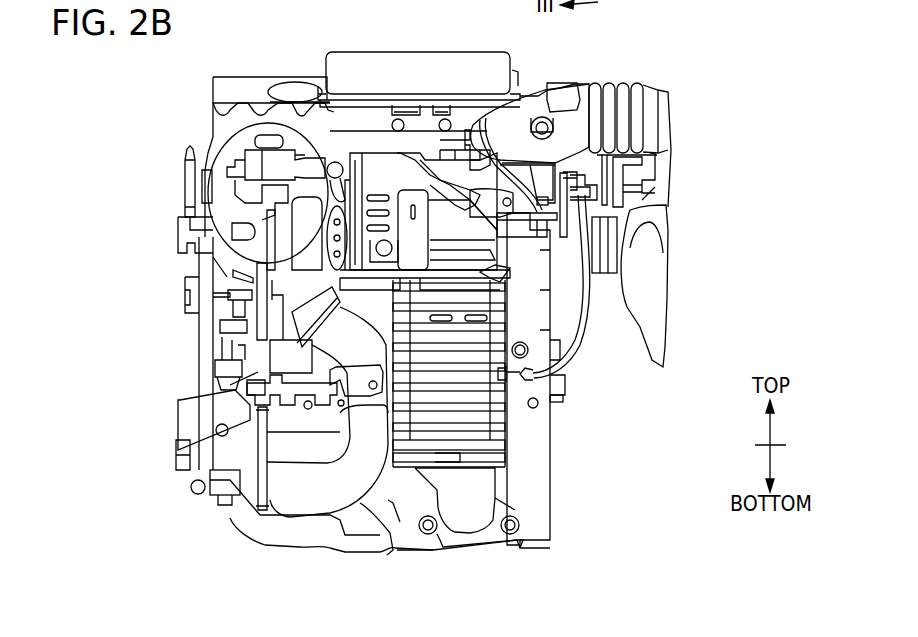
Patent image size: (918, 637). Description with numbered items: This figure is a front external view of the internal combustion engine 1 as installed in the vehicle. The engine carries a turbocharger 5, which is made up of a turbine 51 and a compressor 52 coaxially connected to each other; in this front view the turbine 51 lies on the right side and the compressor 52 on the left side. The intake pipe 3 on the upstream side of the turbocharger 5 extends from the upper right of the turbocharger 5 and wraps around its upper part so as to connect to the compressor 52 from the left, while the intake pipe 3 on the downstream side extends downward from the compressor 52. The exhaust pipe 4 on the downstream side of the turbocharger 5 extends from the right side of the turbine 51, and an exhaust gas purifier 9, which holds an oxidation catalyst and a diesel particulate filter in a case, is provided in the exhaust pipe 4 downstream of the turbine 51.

The internal combustion engine 1 is at (750, 107).
The intake pipe 3 is at (200, 172).
The exhaust pipe 4 is at (482, 490).
The turbocharger 5 is at (338, 206).
The exhaust gas purifier 9 is at (475, 418).
The turbine 51 is at (380, 205).
The compressor 52 is at (307, 217).